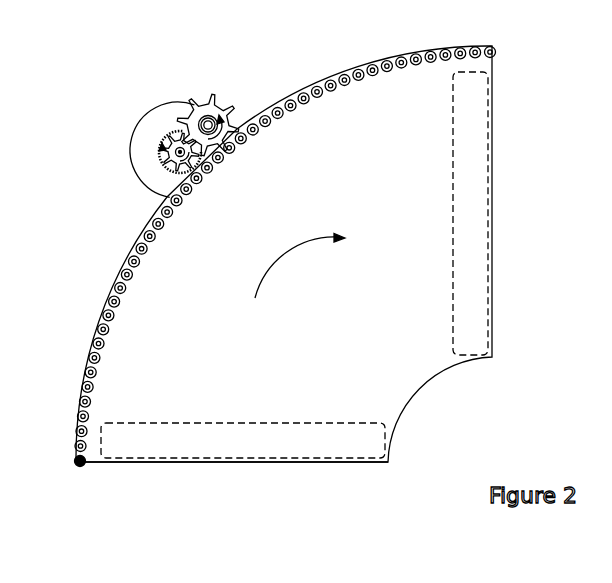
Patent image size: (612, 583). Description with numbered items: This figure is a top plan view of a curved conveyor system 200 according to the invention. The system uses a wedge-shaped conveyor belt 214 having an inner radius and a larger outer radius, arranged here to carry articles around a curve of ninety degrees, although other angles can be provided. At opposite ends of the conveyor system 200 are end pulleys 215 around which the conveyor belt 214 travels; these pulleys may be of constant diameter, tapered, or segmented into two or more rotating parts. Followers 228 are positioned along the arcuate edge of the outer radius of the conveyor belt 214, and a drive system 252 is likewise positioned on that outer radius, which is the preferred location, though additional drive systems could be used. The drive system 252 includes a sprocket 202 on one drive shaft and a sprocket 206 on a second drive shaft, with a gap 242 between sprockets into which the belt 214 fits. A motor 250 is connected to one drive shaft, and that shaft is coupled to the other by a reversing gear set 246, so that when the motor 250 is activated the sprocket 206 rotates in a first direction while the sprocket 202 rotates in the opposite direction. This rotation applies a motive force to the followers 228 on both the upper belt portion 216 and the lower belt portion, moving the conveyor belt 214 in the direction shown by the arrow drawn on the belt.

The curved conveyor system 200 is at (85, 495).
The sprocket 202 is at (207, 100).
The sprocket 206 is at (158, 157).
The conveyor belt 214 is at (334, 327).
The end pulleys 215 is at (473, 128).
The upper belt portion 216 is at (243, 478).
The followers 228 is at (367, 85).
The gap 242 is at (212, 118).
The reversing gear set 246 is at (160, 140).
The motor 250 is at (147, 117).
The drive system 252 is at (156, 82).